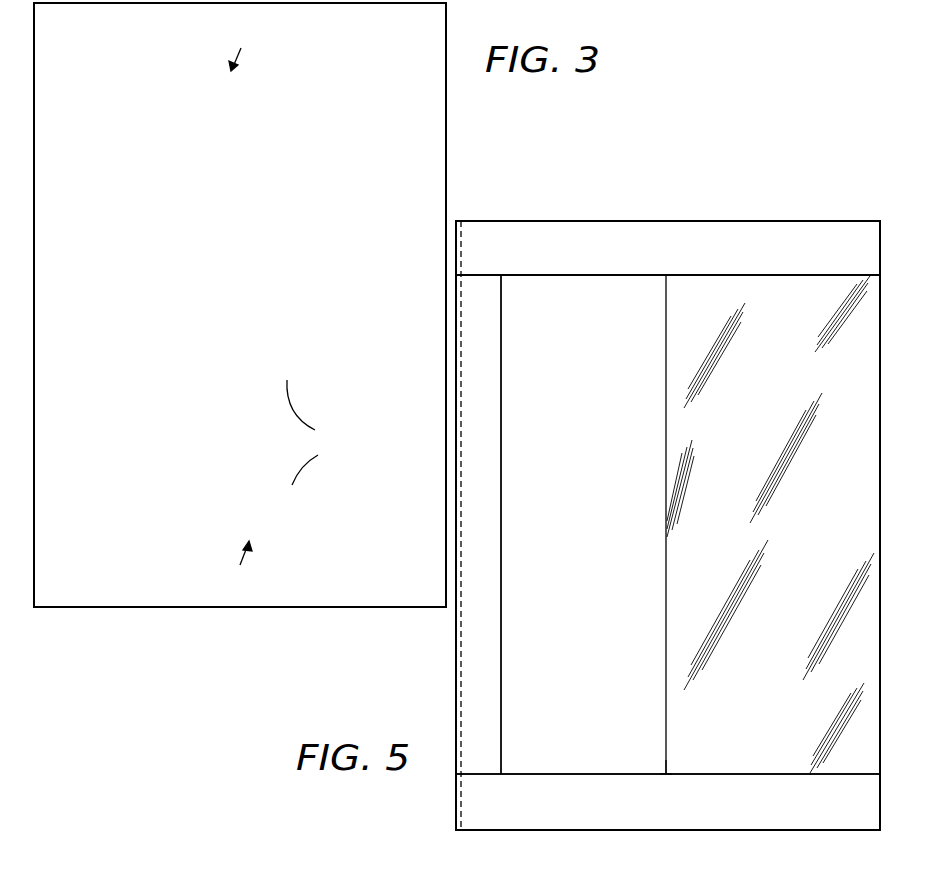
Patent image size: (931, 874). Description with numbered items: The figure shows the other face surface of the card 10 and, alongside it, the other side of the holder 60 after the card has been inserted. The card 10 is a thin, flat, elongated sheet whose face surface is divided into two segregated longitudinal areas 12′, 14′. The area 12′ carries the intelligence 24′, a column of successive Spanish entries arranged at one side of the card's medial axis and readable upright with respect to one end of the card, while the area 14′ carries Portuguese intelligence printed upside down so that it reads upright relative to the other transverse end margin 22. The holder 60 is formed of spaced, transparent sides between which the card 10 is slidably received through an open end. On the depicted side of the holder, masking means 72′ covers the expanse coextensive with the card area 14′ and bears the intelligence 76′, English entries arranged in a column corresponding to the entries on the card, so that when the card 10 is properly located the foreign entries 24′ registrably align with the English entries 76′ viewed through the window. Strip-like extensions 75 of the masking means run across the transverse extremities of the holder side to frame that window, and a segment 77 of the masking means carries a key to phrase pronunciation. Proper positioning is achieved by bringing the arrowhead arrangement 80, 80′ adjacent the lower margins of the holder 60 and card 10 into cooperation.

In FIG. 3, the card 10 is at (458, 146).
In FIG. 3, the transverse end margin 22 is at (119, 608).
In FIG. 3, the area 12′ is at (336, 300).
In FIG. 3, the area 14′ is at (156, 300).
In FIG. 3, the intelligence 24′ is at (322, 432).
In FIG. 5, the intelligence 24′ is at (713, 322).
In FIG. 3, the arrowhead arrangement 80′ is at (246, 306).
In FIG. 5, the arrowhead arrangement 80′ is at (674, 770).
In FIG. 5, the holder 60 is at (598, 214).
In FIG. 5, the strip-like extension 75 is at (808, 240).
In FIG. 5, the intelligence 76′ is at (506, 318).
In FIG. 5, the masking means 72′ is at (624, 400).
In FIG. 5, the segment of masking means 77 is at (480, 521).
In FIG. 5, the arrowhead arrangement 80 is at (661, 774).